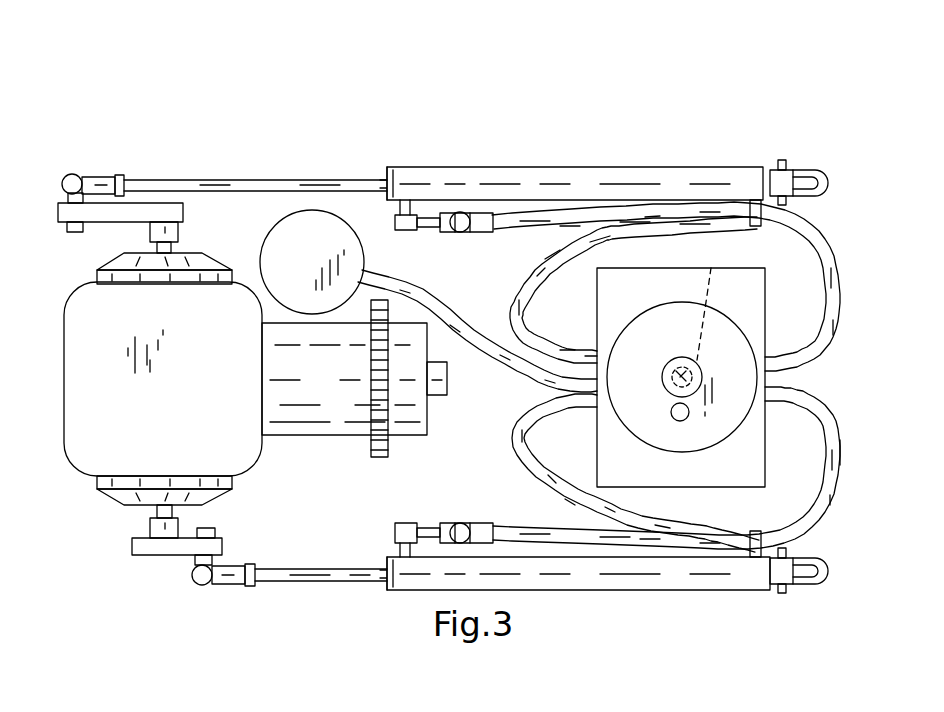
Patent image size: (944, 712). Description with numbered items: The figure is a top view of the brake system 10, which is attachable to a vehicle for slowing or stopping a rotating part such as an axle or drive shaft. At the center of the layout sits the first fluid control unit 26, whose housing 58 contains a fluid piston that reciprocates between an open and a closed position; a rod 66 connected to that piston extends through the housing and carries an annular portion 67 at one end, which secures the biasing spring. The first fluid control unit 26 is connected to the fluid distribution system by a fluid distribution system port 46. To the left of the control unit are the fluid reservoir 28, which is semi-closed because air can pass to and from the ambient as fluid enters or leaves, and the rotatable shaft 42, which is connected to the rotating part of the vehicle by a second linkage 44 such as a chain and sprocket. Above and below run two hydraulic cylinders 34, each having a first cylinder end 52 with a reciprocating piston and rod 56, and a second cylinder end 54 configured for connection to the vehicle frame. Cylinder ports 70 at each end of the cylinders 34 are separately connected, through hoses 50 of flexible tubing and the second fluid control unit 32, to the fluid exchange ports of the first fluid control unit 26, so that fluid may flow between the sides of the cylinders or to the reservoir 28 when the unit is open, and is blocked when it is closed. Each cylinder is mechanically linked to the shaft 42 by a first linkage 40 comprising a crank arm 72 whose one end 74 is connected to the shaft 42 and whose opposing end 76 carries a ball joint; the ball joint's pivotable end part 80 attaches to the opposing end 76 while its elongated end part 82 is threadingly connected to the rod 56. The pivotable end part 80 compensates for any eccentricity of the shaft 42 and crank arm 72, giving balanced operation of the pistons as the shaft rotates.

The brake system 10 is at (707, 78).
The first fluid control unit 26 is at (768, 367).
The fluid reservoir 28 is at (312, 238).
The second fluid control unit 32 is at (462, 214).
The hydraulic cylinders 34 is at (594, 167).
The first linkages 40 is at (63, 152).
The rotatable shaft 42 is at (135, 262).
The second linkage 44 is at (376, 458).
The fluid distribution system port 46 is at (688, 418).
The hoses 50 is at (838, 473).
The first cylinder end 52 is at (175, 178).
The second cylinder end 54 is at (775, 166).
The rod 56 is at (372, 172).
The housing 58 is at (752, 378).
The rod 66 is at (705, 300).
The annular portion 67 is at (678, 358).
The cylinder ports 70 is at (403, 203).
The crank arm 72 is at (97, 227).
The one end 74 is at (180, 212).
The opposing end 76 is at (172, 548).
The pivotable end part 80 is at (73, 177).
The elongated end part 82 is at (99, 177).